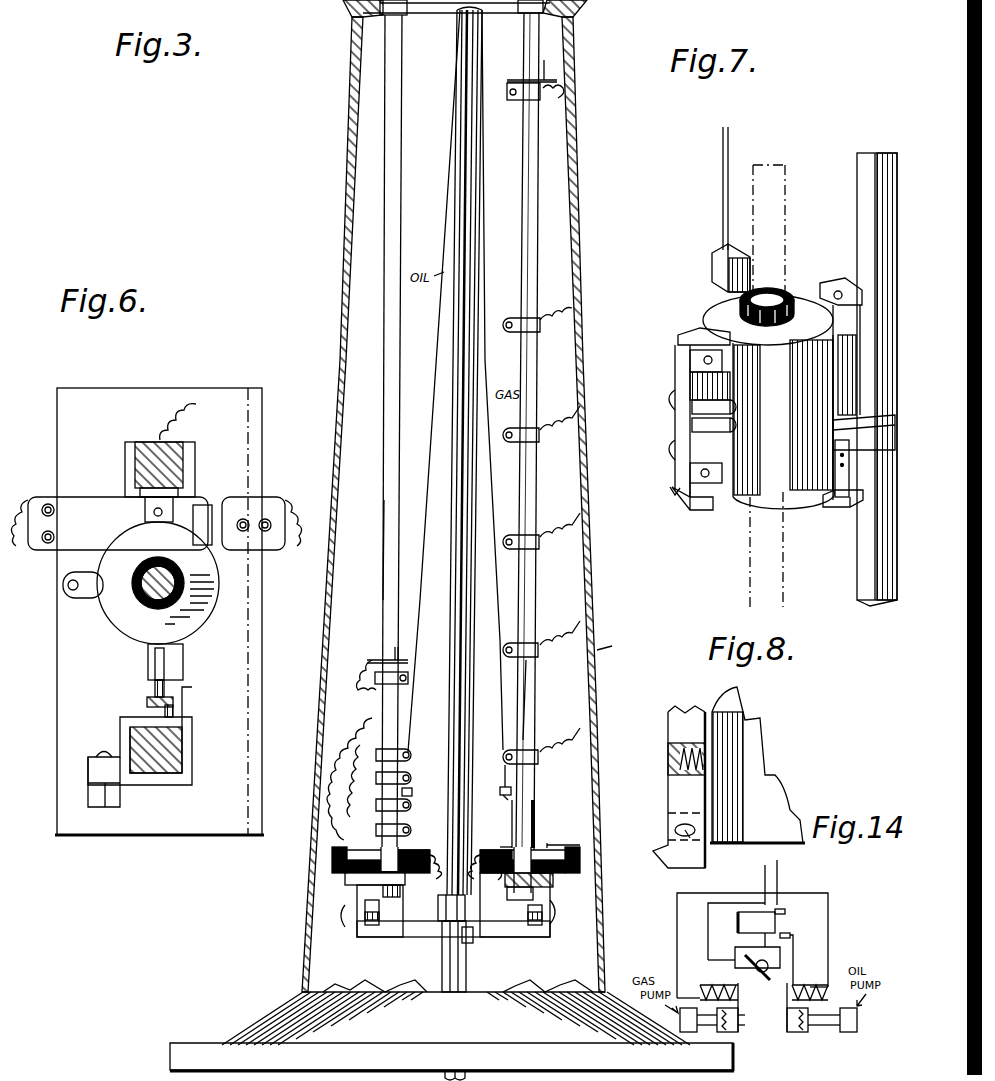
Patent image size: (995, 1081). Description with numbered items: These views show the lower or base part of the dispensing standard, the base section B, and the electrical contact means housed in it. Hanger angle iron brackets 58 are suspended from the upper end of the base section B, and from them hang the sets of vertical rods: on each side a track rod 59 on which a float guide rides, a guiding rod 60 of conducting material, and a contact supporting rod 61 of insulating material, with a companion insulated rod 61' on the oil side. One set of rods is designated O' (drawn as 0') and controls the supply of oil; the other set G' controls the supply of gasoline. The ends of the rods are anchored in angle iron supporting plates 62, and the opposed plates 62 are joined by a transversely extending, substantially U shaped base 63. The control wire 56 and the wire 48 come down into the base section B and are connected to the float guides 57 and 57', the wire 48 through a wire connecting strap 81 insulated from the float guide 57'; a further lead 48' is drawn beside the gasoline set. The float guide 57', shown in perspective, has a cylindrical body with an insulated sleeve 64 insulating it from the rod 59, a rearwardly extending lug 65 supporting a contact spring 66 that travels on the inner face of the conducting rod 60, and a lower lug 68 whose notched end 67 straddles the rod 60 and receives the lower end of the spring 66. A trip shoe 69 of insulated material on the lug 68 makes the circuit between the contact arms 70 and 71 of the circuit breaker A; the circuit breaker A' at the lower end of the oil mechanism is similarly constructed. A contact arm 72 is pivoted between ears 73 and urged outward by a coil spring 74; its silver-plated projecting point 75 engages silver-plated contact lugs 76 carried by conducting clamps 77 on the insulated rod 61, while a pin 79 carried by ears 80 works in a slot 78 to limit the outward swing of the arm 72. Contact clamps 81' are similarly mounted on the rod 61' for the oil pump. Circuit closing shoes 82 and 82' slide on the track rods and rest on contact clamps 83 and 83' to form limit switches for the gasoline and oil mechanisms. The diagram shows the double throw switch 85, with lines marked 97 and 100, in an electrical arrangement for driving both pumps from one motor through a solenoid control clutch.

In FIG. 3, the hanger angle iron brackets 58 is at (516, 14).
In FIG. 3, the circuit closing shoe 82 is at (561, 66).
In FIG. 3, the contact clamp 83 is at (525, 115).
In FIG. 3, the gasoline control set of rods G' is at (567, 431).
In FIG. 3, the oil control set of rods 0' is at (351, 432).
In FIG. 3, the insulated rod 61' is at (362, 550).
In FIG. 3, the circuit closing shoe 82' is at (373, 638).
In FIG. 3, the contact clamp 83' is at (369, 664).
In FIG. 3, the control wire 56 is at (419, 622).
In FIG. 3, the gas line 48' is at (533, 380).
In FIG. 3, the base section B is at (609, 649).
In FIG. 3, the contact supporting rod 61 is at (548, 700).
In FIG. 6, the contact supporting rod 61 is at (156, 775).
In FIG. 3, the conducting clamps 77 is at (527, 750).
In FIG. 6, the conducting clamps 77 is at (192, 736).
In FIG. 3, the contact clamps 81' is at (418, 769).
In FIG. 3, the float guide 57 is at (349, 779).
In FIG. 3, the float guide 57' is at (550, 816).
In FIG. 7, the float guide 57' is at (768, 422).
In FIG. 3, the wire connecting strap 81 is at (496, 799).
In FIG. 7, the wire connecting strap 81 is at (705, 268).
In FIG. 6, the wire connecting strap 81 is at (60, 615).
In FIG. 3, the contact arm 70 is at (513, 860).
In FIG. 6, the contact arm 70 is at (86, 500).
In FIG. 3, the contact arm 71 is at (558, 846).
In FIG. 6, the contact arm 71 is at (246, 508).
In FIG. 3, the circuit breaker A is at (548, 863).
In FIG. 3, the circuit breaker A' is at (346, 868).
In FIG. 3, the U shaped base 63 is at (412, 928).
In FIG. 3, the angle iron supporting plates 62 is at (557, 918).
In FIG. 6, the angle iron supporting plates 62 is at (172, 830).
In FIG. 7, the wire 48 is at (745, 188).
In FIG. 7, the guiding rod 60 is at (866, 165).
In FIG. 6, the guiding rod 60 is at (175, 473).
In FIG. 7, the track rod 59 is at (770, 238).
In FIG. 6, the track rod 59 is at (140, 598).
In FIG. 7, the insulated sleeve 64 is at (786, 285).
In FIG. 7, the lug 65 is at (846, 278).
In FIG. 7, the ears 73 is at (684, 332).
In FIG. 6, the ears 73 is at (148, 665).
In FIG. 7, the contact arm 72 is at (692, 388).
In FIG. 6, the contact arm 72 is at (163, 668).
In FIG. 8, the contact arm 72 is at (668, 790).
In FIG. 7, the coil spring 74 is at (694, 443).
In FIG. 8, the coil spring 74 is at (712, 757).
In FIG. 7, the ears 80 is at (697, 473).
In FIG. 7, the pin 79 is at (703, 500).
In FIG. 7, the projecting point 75 is at (672, 497).
In FIG. 7, the contact spring 66 is at (866, 360).
In FIG. 7, the notched end 67 is at (861, 413).
In FIG. 7, the lug 68 is at (858, 450).
In FIG. 7, the trip shoe 69 is at (840, 507).
In FIG. 6, the contact lugs 76 is at (147, 701).
In FIG. 8, the slot 78 is at (690, 838).
In FIG. 14, the wire 97 is at (764, 880).
In FIG. 14, the wire 100 is at (779, 877).
In FIG. 14, the double throw switch 85 is at (738, 918).